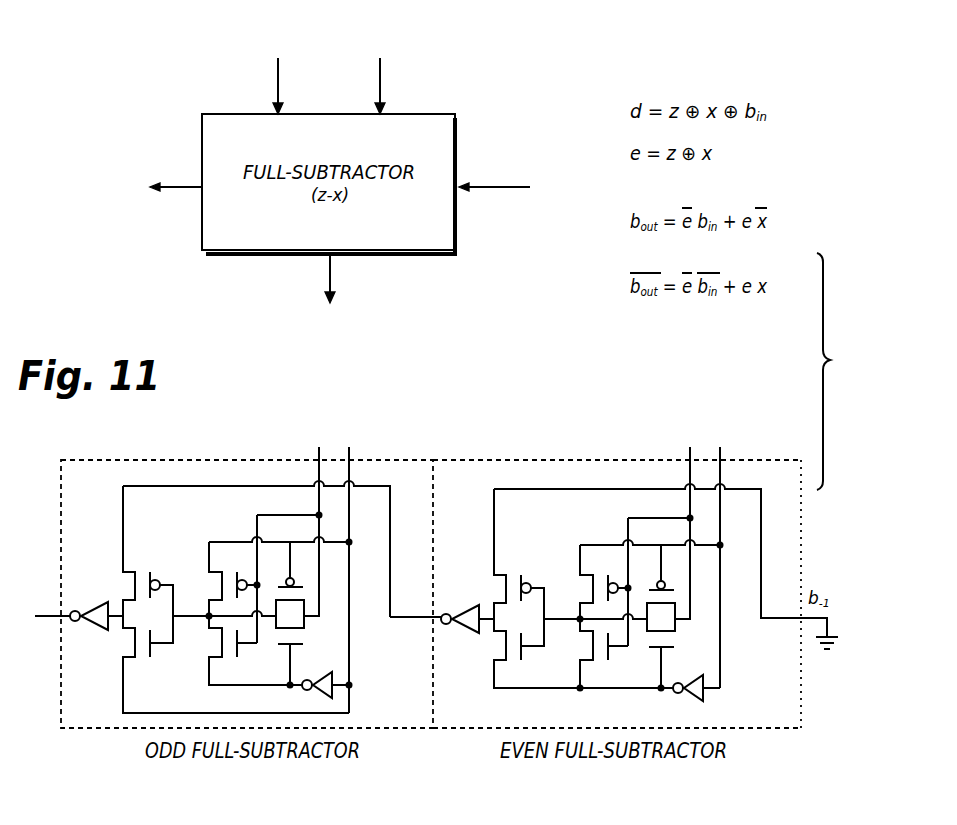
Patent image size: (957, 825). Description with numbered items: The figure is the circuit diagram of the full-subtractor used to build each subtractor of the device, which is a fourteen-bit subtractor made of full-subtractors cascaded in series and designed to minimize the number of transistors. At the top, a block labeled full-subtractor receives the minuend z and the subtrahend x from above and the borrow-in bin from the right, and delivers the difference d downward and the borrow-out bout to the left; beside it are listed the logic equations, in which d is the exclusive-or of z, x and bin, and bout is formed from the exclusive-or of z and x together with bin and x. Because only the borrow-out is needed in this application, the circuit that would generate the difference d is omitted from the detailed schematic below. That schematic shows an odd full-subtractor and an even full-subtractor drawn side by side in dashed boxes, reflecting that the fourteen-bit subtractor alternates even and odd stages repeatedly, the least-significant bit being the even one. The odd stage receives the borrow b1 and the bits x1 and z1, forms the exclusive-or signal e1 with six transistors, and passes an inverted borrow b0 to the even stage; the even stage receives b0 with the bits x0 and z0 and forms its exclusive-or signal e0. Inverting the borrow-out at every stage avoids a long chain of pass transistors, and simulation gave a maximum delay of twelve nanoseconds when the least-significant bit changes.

The minuend input z is at (279, 73).
The subtrahend input x is at (380, 73).
The difference output d is at (330, 293).
The borrow-in bin is at (510, 186).
The borrow-out bout is at (151, 186).
The borrow input of odd full-subtractor b1 is at (79, 610).
The exclusive-or signal of odd full-subtractor e1 is at (224, 603).
The subtrahend bit of odd full-subtractor x1 is at (315, 518).
The minuend bit of odd full-subtractor z1 is at (346, 566).
The inverted borrow-out of odd full-subtractor b0 is at (417, 587).
The exclusive-or signal of even full-subtractor e0 is at (595, 605).
The subtrahend bit of even full-subtractor x0 is at (686, 519).
The minuend bit of even full-subtractor z0 is at (717, 554).